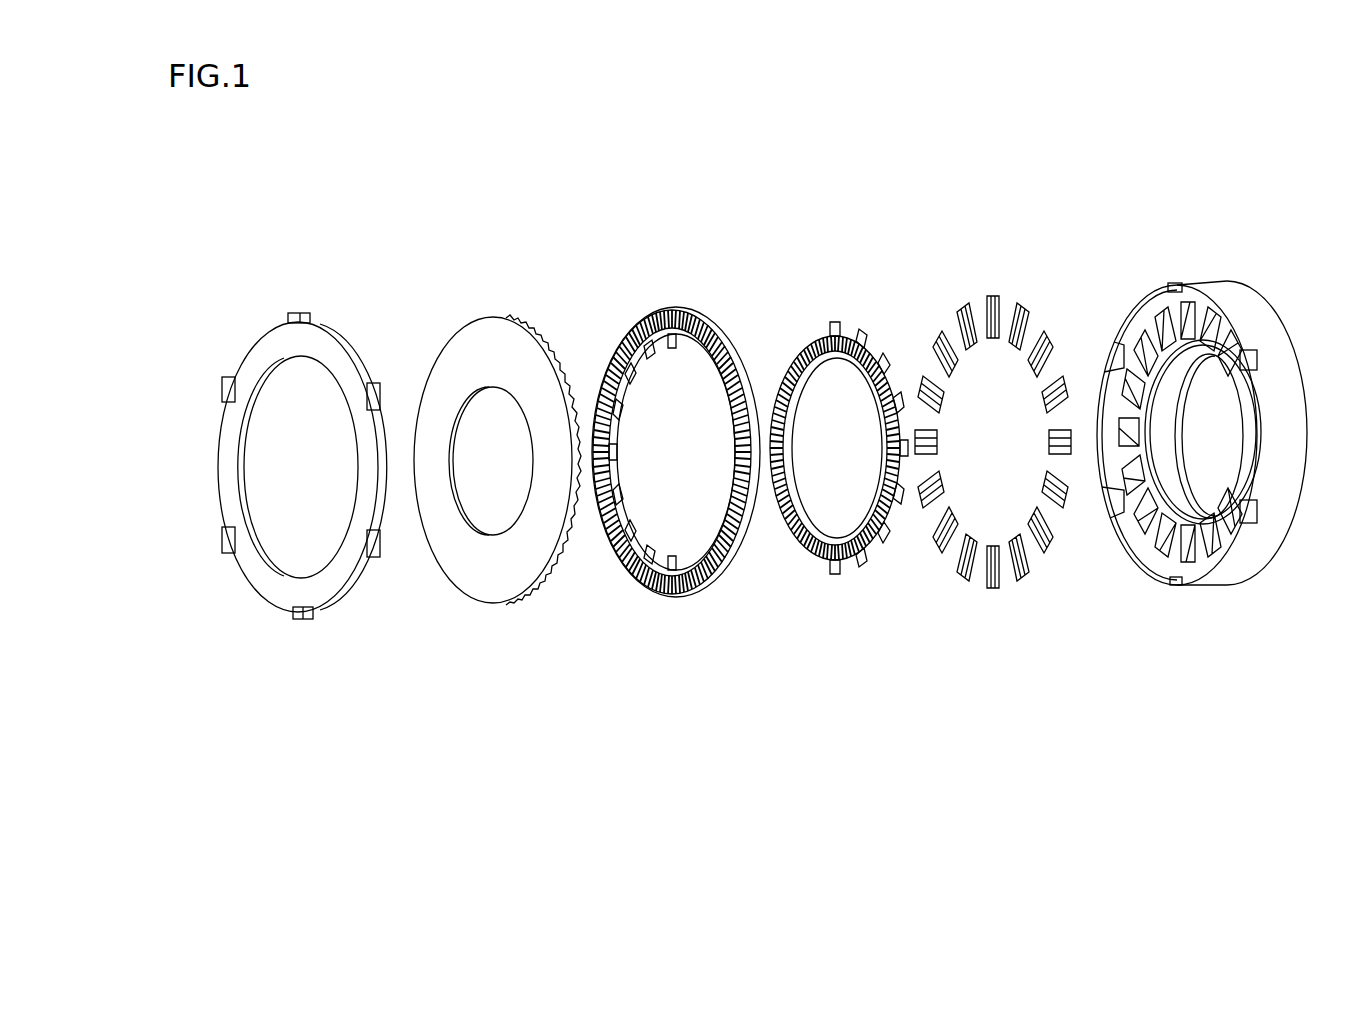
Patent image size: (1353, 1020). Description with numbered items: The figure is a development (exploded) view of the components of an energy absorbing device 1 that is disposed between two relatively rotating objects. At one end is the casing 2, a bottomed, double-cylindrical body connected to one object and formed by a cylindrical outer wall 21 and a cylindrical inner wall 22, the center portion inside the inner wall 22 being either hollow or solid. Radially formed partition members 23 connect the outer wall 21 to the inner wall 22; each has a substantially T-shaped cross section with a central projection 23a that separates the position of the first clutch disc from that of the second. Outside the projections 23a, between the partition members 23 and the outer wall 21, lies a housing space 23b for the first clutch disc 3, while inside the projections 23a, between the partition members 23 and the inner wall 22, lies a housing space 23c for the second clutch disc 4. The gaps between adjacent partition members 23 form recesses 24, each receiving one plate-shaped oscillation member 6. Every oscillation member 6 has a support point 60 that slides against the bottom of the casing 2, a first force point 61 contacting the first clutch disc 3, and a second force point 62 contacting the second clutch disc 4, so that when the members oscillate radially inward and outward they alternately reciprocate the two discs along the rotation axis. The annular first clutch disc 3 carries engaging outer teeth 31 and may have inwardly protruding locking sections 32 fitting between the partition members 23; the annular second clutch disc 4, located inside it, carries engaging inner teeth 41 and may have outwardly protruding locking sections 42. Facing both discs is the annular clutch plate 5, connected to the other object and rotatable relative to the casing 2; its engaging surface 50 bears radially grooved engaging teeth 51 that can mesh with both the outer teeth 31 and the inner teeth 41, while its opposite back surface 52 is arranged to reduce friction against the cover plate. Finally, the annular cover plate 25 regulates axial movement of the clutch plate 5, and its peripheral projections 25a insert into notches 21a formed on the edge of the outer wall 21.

The energy absorbing device 1 is at (522, 230).
The casing 2 is at (1289, 320).
The outer wall 21 is at (1299, 409).
The notch 21a is at (1258, 364).
The inner wall 22 is at (1172, 432).
The partition member 23 is at (1144, 332).
The projection 23a is at (1150, 341).
The housing space 23b is at (1183, 302).
The housing space 23c is at (1200, 338).
The recess 24 is at (1138, 405).
The cover plate 25 is at (214, 419).
The projection 25a is at (299, 313).
The first clutch disc 3 is at (727, 330).
The engaging outer teeth 31 is at (620, 332).
The locking section 32 is at (663, 340).
The second clutch disc 4 is at (879, 341).
The engaging inner teeth 41 is at (790, 356).
The locking section 42 is at (827, 329).
The clutch plate 5 is at (434, 345).
The engaging surface 50 is at (562, 351).
The engaging teeth 51 is at (541, 332).
The back surface 52 is at (490, 365).
The oscillation member 6 is at (967, 306).
The support point 60 is at (1001, 312).
The first force point 61 is at (981, 303).
The second force point 62 is at (985, 350).